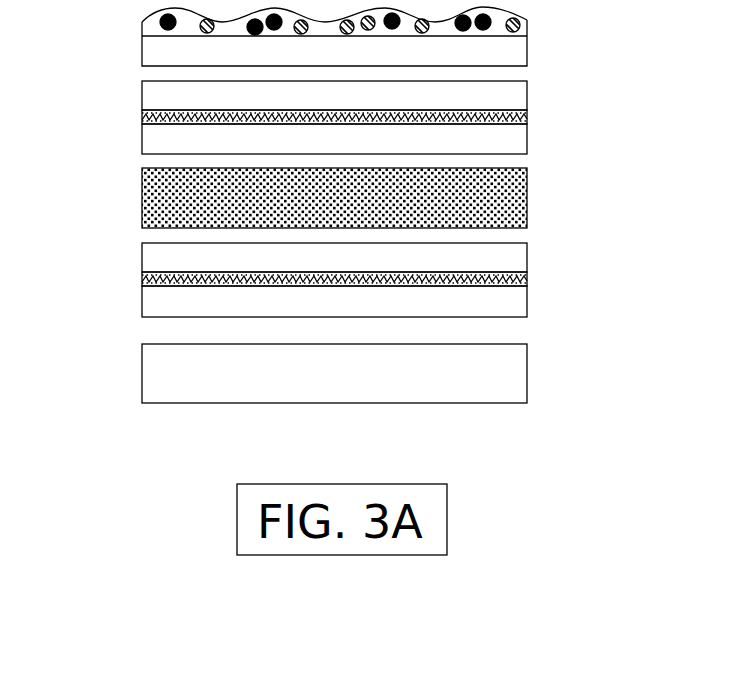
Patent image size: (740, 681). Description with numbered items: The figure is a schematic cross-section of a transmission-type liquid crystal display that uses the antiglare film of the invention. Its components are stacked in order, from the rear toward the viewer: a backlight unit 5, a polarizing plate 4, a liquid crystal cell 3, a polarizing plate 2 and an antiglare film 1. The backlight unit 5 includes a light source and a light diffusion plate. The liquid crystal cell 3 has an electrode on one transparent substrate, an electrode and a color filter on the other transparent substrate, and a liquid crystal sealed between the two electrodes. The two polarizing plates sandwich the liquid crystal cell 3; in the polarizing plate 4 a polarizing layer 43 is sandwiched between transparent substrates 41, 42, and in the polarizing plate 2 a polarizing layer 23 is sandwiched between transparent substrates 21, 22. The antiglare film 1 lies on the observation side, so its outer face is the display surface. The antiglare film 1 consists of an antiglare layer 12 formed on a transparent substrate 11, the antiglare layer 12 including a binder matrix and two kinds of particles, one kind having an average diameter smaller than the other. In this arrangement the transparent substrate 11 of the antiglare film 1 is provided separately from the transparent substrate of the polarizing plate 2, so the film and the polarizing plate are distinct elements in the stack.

The antiglare film 1 is at (323, 41).
The transparent substrate 11 is at (165, 47).
The antiglare layer 12 is at (128, 10).
The polarizing plate 2 is at (303, 127).
The transparent substrate 21 is at (158, 95).
The transparent substrate 22 is at (163, 146).
The polarizing layer 23 is at (147, 115).
The liquid crystal cell 3 is at (510, 213).
The polarizing plate 4 is at (308, 286).
The transparent substrate 41 is at (162, 253).
The transparent substrate 42 is at (168, 305).
The polarizing layer 43 is at (150, 280).
The backlight unit 5 is at (510, 380).